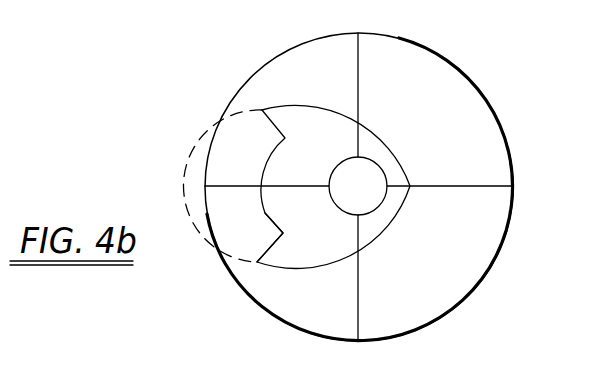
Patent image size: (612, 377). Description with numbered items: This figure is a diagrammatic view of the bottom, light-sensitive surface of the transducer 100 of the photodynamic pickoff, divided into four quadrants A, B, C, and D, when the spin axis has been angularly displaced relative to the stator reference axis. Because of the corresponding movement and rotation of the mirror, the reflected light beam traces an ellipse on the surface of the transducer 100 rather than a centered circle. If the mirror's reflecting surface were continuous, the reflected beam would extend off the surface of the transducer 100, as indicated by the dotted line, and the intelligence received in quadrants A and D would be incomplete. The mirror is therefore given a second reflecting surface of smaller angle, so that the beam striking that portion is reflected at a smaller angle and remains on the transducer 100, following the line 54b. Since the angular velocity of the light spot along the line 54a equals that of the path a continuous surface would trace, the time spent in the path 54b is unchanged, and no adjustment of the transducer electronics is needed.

The transducer 100 is at (492, 274).
The line 54a is at (327, 112).
The line 54b is at (266, 213).